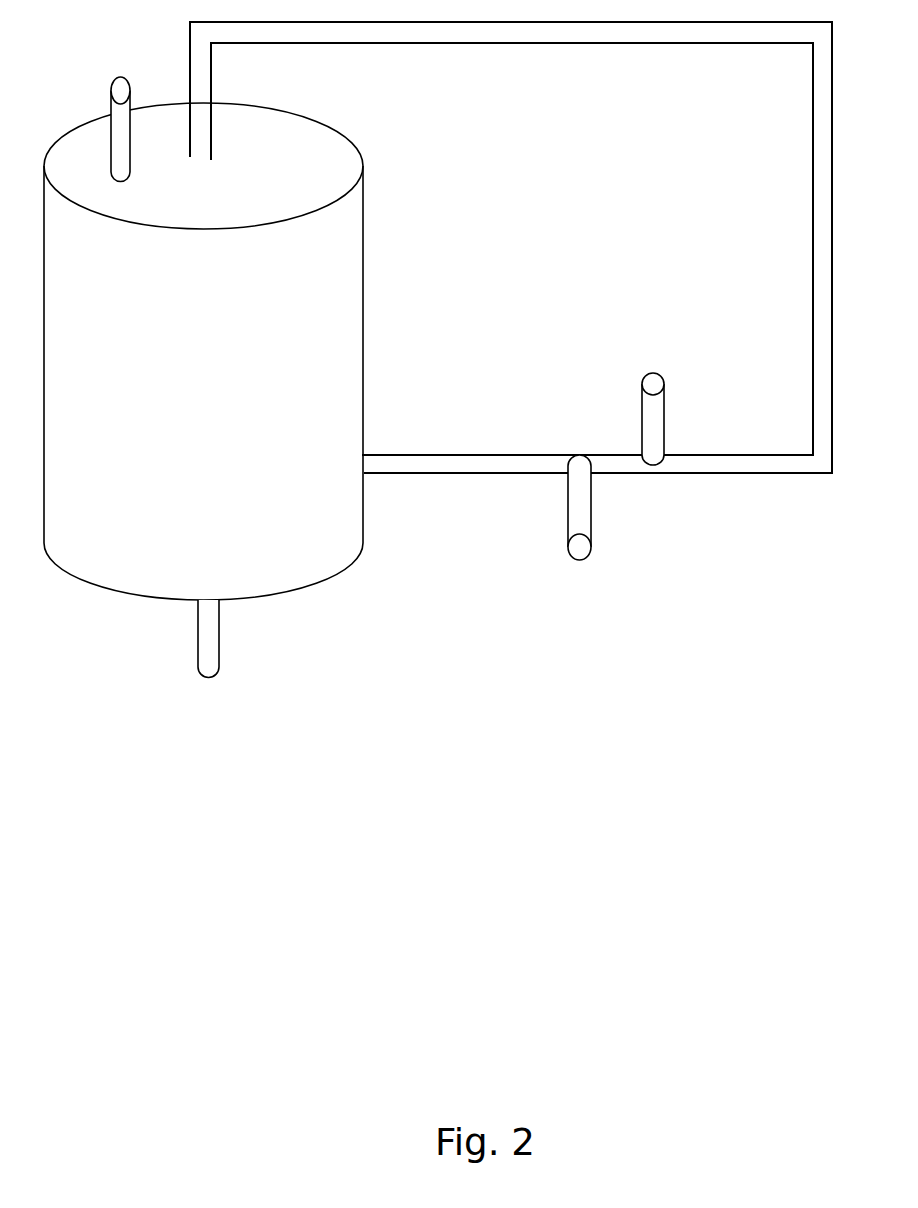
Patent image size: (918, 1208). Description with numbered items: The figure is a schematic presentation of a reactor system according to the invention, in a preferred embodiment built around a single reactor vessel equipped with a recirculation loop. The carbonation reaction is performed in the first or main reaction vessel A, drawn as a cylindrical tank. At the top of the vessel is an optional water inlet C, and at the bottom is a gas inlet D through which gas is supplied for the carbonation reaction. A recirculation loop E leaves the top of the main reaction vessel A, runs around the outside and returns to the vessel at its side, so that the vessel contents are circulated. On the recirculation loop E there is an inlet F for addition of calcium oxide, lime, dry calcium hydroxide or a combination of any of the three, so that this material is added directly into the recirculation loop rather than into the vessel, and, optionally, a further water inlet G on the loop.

The first or main reaction vessel A is at (203, 351).
The water inlet C is at (122, 106).
The gas inlet D is at (207, 662).
The recirculation loop E is at (511, 247).
The inlet for addition of calcium oxide, lime, dry calcium hydroxide or a combinatio F is at (650, 389).
The water inlet G is at (576, 537).